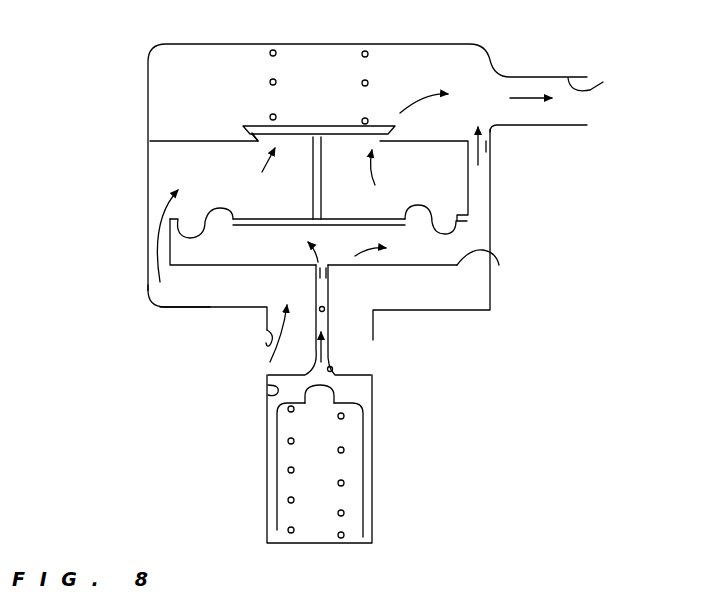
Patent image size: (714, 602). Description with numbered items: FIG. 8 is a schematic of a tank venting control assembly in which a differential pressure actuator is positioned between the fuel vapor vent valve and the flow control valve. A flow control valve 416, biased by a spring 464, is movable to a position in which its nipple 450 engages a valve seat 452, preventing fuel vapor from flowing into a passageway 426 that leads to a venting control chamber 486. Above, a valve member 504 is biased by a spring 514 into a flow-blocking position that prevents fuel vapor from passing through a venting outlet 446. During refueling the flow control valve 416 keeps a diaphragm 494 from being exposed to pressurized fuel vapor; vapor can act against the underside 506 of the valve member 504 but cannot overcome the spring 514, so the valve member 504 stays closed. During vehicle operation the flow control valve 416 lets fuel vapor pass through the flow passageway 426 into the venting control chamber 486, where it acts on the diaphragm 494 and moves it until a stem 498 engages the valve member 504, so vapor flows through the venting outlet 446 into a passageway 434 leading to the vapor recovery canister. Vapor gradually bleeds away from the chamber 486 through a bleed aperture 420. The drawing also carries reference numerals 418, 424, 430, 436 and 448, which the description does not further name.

The flow control valve 416 is at (365, 505).
The valve body 418 is at (140, 242).
The bleed aperture 420 is at (468, 140).
The upper chamber 424 is at (232, 108).
The flow passageway 426 is at (324, 310).
The opening 430 is at (267, 345).
The passageway 434 is at (605, 77).
The wall 436 is at (148, 285).
The venting outlet 446 is at (258, 143).
The recess 448 is at (276, 390).
The nipple 450 is at (322, 392).
The valve seat 452 is at (332, 368).
The spring 464 is at (344, 451).
The venting control chamber 486 is at (499, 265).
The diaphragm 494 is at (417, 230).
The stem 498 is at (312, 198).
The valve member 504 is at (300, 125).
The underside 506 is at (338, 141).
The spring 514 is at (368, 82).